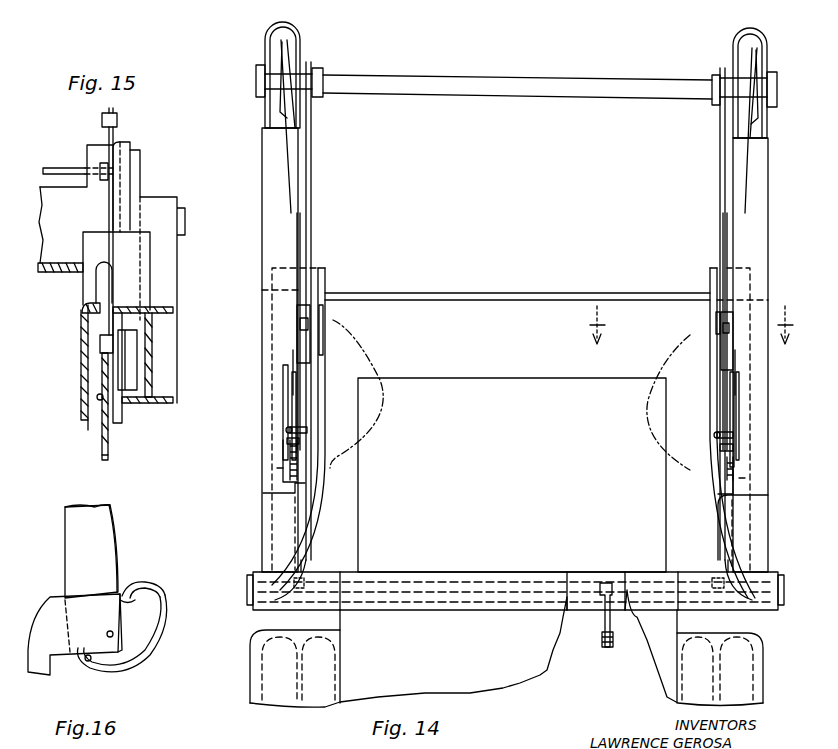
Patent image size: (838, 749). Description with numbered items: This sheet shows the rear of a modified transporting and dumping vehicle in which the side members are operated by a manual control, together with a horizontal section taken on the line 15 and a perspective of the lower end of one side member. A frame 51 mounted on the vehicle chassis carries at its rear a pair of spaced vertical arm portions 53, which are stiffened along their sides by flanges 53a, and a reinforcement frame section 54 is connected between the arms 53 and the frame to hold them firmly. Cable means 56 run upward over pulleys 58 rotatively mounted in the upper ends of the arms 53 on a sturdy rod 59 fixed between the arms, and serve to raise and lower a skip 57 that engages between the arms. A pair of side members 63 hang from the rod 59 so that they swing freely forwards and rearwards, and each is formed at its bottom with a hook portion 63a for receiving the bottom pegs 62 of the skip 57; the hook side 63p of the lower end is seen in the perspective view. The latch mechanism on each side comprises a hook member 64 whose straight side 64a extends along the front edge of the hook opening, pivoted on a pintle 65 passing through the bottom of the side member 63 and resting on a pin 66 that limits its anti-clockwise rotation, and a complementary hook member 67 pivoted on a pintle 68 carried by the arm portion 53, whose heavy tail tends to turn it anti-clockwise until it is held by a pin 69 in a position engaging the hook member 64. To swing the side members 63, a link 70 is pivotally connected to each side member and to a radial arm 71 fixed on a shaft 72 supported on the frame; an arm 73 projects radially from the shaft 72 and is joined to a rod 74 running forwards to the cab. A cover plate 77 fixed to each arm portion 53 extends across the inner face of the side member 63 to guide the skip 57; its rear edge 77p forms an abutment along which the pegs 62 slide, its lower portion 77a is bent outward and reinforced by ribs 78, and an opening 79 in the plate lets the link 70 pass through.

In FIG. 14, the section line 15— 15 is at (692, 325).
In FIG. 14, the frame 51 is at (700, 619).
In FIG. 14, the arm portions 53 is at (272, 179).
In FIG. 15, the arm portions 53 is at (148, 405).
In FIG. 15, the flanges 53a is at (165, 400).
In FIG. 14, the reinforcement frame section 54 is at (506, 299).
In FIG. 15, the reinforcement frame section 54 is at (59, 281).
In FIG. 14, the cable means 56 is at (290, 169).
In FIG. 14, the skip 57 is at (332, 447).
In FIG. 14, the pulleys 58 is at (280, 50).
In FIG. 14, the rod 59 is at (402, 84).
In FIG. 14, the bottom pegs 62 is at (272, 389).
In FIG. 14, the side members 63 is at (312, 147).
In FIG. 15, the side members 63 is at (102, 376).
In FIG. 16, the side members 63 is at (108, 526).
In FIG. 15, the hook portion 63a is at (108, 439).
In FIG. 16, the hook portion 63a is at (152, 583).
In FIG. 16, the strip arm 63' 63p is at (165, 641).
In FIG. 14, the hook member 64 is at (292, 404).
In FIG. 15, the hook member 64 is at (118, 421).
In FIG. 16, the hook member 64 is at (88, 611).
In FIG. 16, the straight side 64a is at (130, 599).
In FIG. 14, the pintle 65 is at (286, 430).
In FIG. 16, the pintle 65 is at (107, 634).
In FIG. 14, the pin 66 is at (288, 442).
In FIG. 16, the pin 66 is at (86, 663).
In FIG. 14, the complementary hook member 67 is at (298, 482).
In FIG. 15, the complementary hook member 67 is at (135, 371).
In FIG. 14, the pintles 68 is at (288, 460).
In FIG. 14, the pins 69 is at (277, 469).
In FIG. 14, the link 70 is at (300, 326).
In FIG. 15, the link 70 is at (113, 131).
In FIG. 14, the radial arms 71 is at (310, 560).
In FIG. 15, the radial arms 71 is at (120, 151).
In FIG. 14, the shaft 72 is at (578, 580).
In FIG. 15, the shaft 72 is at (56, 162).
In FIG. 14, the arm 73 is at (604, 615).
In FIG. 14, the rod 74 is at (612, 644).
In FIG. 14, the cover plate 77 is at (322, 271).
In FIG. 15, the cover plate 77 is at (80, 396).
In FIG. 14, the rear edges 77p is at (326, 319).
In FIG. 15, the rear edges 77p is at (86, 426).
In FIG. 14, the lower portions 77a is at (292, 558).
In FIG. 14, the ribs 78 is at (278, 512).
In FIG. 14, the opening 79 is at (298, 353).
In FIG. 15, the opening 79 is at (98, 306).